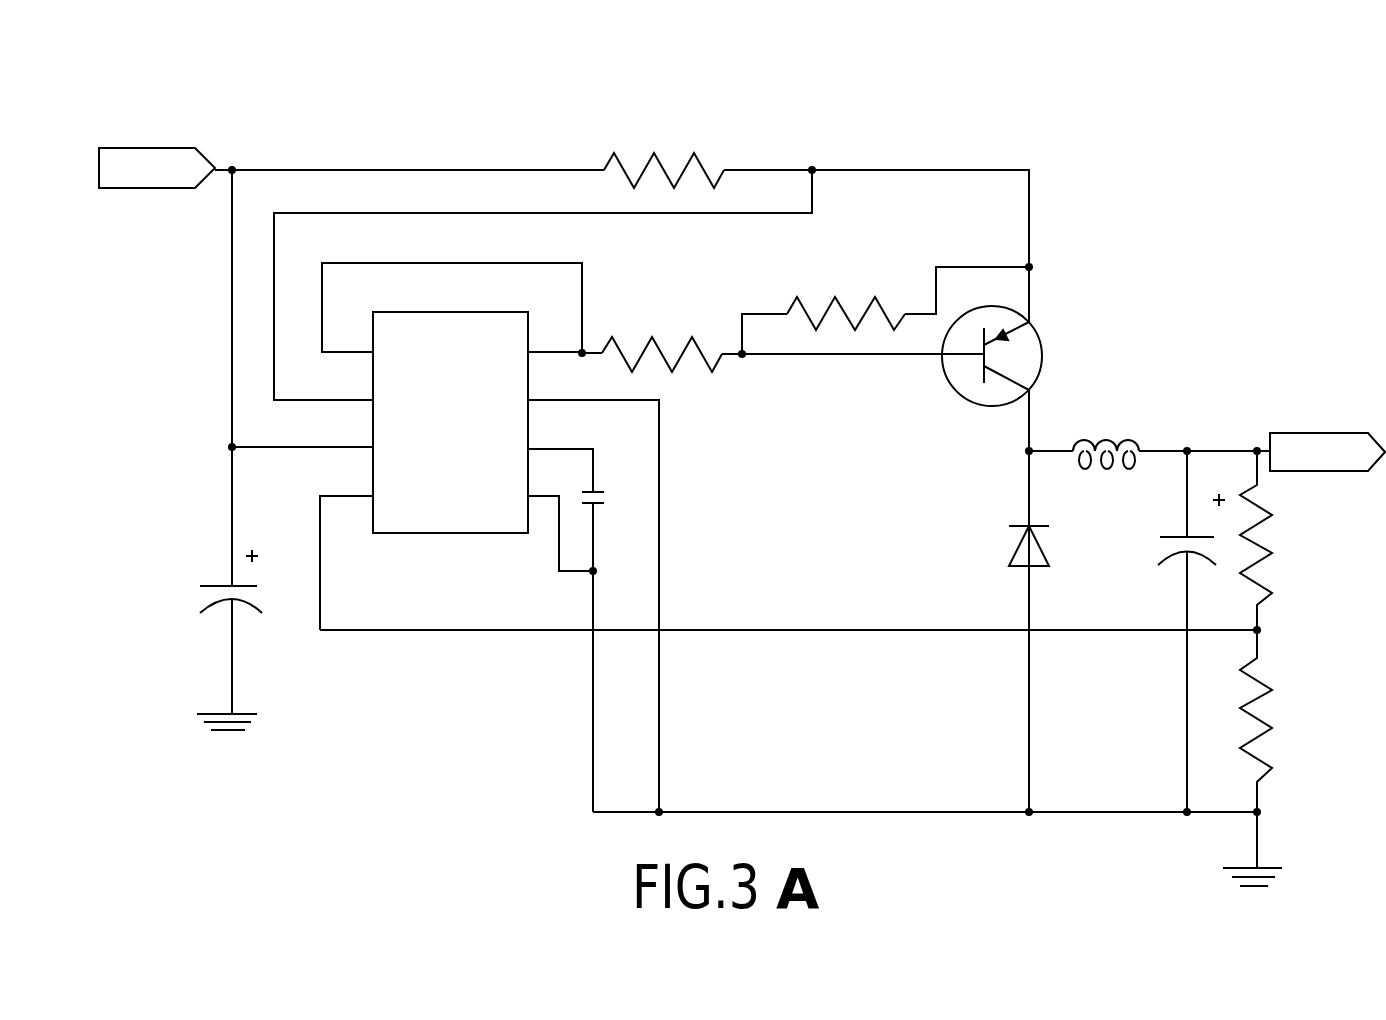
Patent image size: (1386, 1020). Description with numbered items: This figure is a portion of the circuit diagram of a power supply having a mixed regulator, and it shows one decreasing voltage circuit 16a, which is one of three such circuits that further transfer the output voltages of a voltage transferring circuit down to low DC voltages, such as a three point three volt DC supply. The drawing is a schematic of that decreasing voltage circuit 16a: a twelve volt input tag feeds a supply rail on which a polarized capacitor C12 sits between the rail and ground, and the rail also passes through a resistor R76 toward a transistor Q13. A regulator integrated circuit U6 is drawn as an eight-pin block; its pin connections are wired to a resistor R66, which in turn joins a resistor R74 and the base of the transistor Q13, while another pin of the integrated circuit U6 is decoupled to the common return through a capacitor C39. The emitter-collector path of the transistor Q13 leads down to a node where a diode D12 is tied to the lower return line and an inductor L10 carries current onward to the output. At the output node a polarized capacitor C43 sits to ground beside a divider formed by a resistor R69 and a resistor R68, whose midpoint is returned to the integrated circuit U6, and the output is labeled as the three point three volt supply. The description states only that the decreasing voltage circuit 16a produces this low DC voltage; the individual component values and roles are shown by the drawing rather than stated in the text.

The decreasing voltage circuit 16a is at (1062, 166).
The regulator IC U6 is at (449, 404).
The resistor R76 is at (664, 150).
The resistor R66 is at (662, 333).
The resistor R74 is at (846, 293).
The PNP transistor Q13 is at (1020, 351).
The inductor L10 is at (1106, 432).
The diode D12 is at (1007, 525).
The capacitor C43 is at (1176, 631).
The resistor R69 is at (1292, 540).
The resistor R68 is at (1286, 721).
The capacitor C12 is at (246, 603).
The capacitor C39 is at (617, 514).